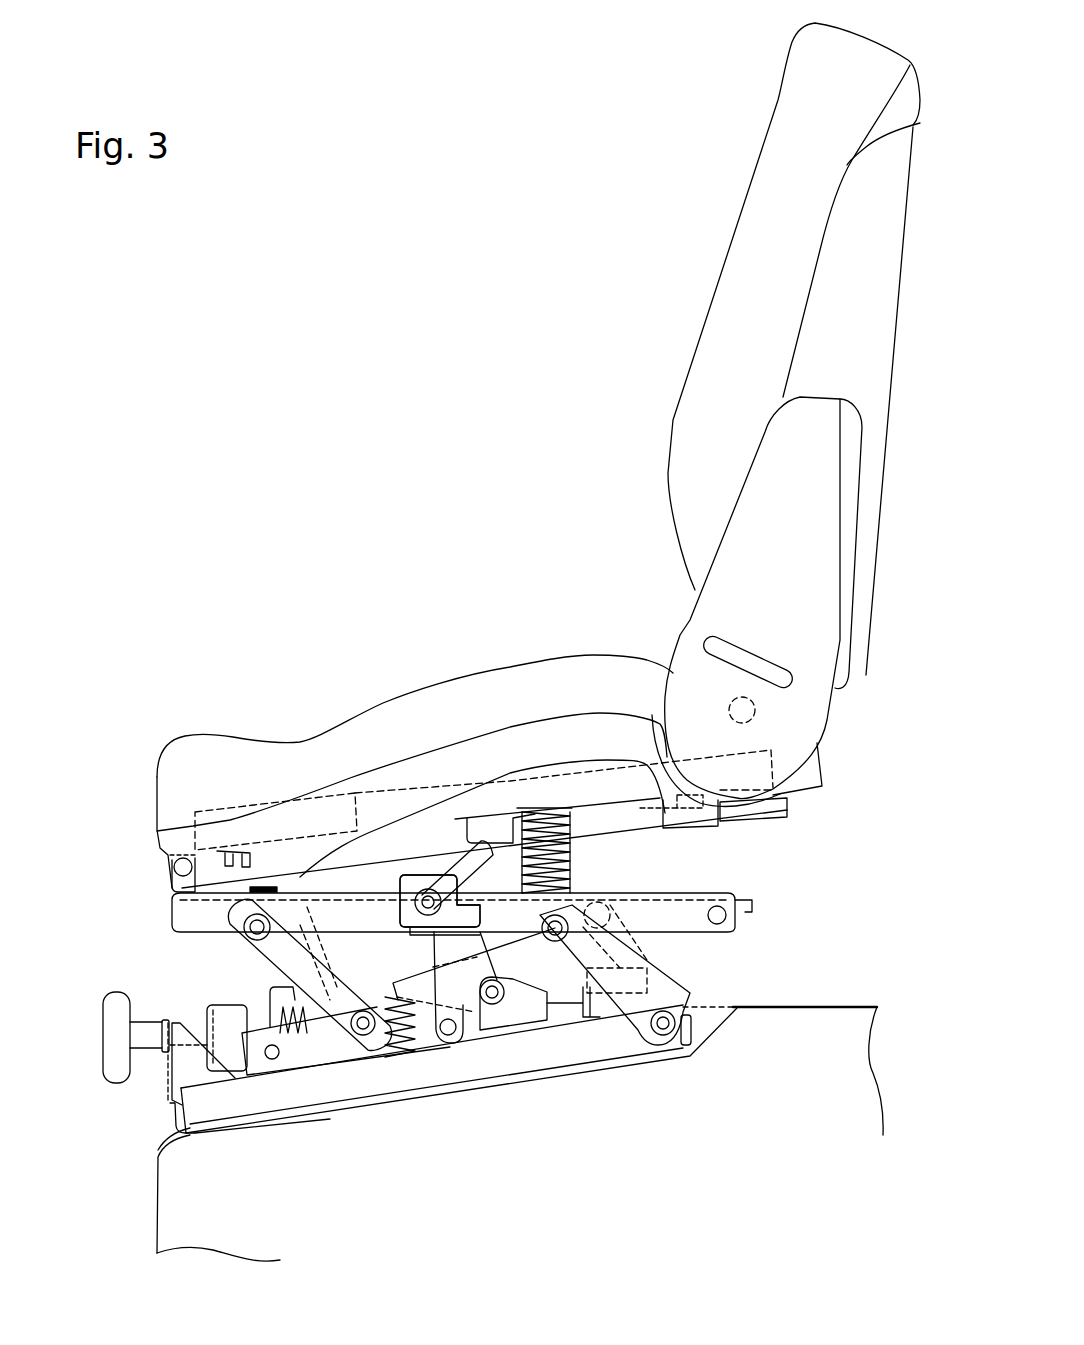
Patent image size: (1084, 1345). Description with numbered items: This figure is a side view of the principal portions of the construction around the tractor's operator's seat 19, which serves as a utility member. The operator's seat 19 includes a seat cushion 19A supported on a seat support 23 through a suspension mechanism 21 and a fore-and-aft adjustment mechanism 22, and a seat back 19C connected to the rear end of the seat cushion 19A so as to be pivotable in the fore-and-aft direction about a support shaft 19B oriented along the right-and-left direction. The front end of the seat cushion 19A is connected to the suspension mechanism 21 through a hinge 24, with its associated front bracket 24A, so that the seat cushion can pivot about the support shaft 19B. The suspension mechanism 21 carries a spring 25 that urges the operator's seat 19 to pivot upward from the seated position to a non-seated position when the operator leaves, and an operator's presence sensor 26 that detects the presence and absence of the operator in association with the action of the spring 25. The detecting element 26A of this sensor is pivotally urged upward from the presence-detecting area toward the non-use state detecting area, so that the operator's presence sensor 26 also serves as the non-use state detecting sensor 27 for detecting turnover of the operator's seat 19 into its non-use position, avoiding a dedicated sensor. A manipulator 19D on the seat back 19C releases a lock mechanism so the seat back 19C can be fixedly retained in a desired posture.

The operator's seat 19 is at (705, 312).
The seat cushion 19A is at (548, 660).
The support shaft 19B is at (756, 711).
The seat back 19C is at (667, 466).
The manipulator 19D is at (740, 647).
The suspension mechanism 21 is at (672, 977).
The fore-and-aft adjustment mechanism 22 is at (446, 1093).
The seat support 23 is at (158, 1225).
The hinge 24 is at (170, 880).
The front bracket 24A is at (165, 858).
The spring 25 is at (567, 877).
The operator's presence sensor 26 is at (400, 885).
The non-use state detecting sensor 27 is at (416, 822).
The detecting element 26A is at (492, 842).